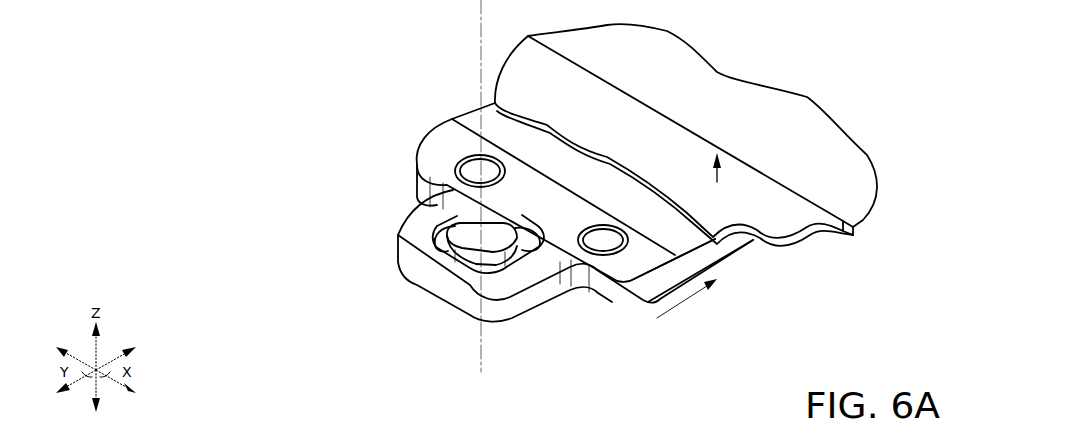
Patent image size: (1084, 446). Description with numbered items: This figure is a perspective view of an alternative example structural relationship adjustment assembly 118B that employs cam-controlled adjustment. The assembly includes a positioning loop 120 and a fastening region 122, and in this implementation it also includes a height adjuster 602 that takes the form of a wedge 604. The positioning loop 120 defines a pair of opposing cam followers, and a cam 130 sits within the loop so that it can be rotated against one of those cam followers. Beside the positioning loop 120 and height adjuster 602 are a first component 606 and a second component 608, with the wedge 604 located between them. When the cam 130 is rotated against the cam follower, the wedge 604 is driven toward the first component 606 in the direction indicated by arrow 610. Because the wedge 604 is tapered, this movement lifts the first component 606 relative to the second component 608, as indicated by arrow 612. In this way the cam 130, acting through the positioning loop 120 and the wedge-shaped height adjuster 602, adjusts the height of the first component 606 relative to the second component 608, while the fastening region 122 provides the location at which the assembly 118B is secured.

The height adjuster 602 is at (460, 105).
The fastening region 122 is at (402, 145).
The structural relationship adjustment assembly 118B is at (303, 233).
The cam 130 is at (473, 249).
The positioning loop 120 is at (470, 325).
The second component 608 is at (700, 53).
The arrow 612 is at (716, 180).
The first component 606 is at (795, 233).
The wedge 604 is at (723, 257).
The arrow 610 is at (683, 305).